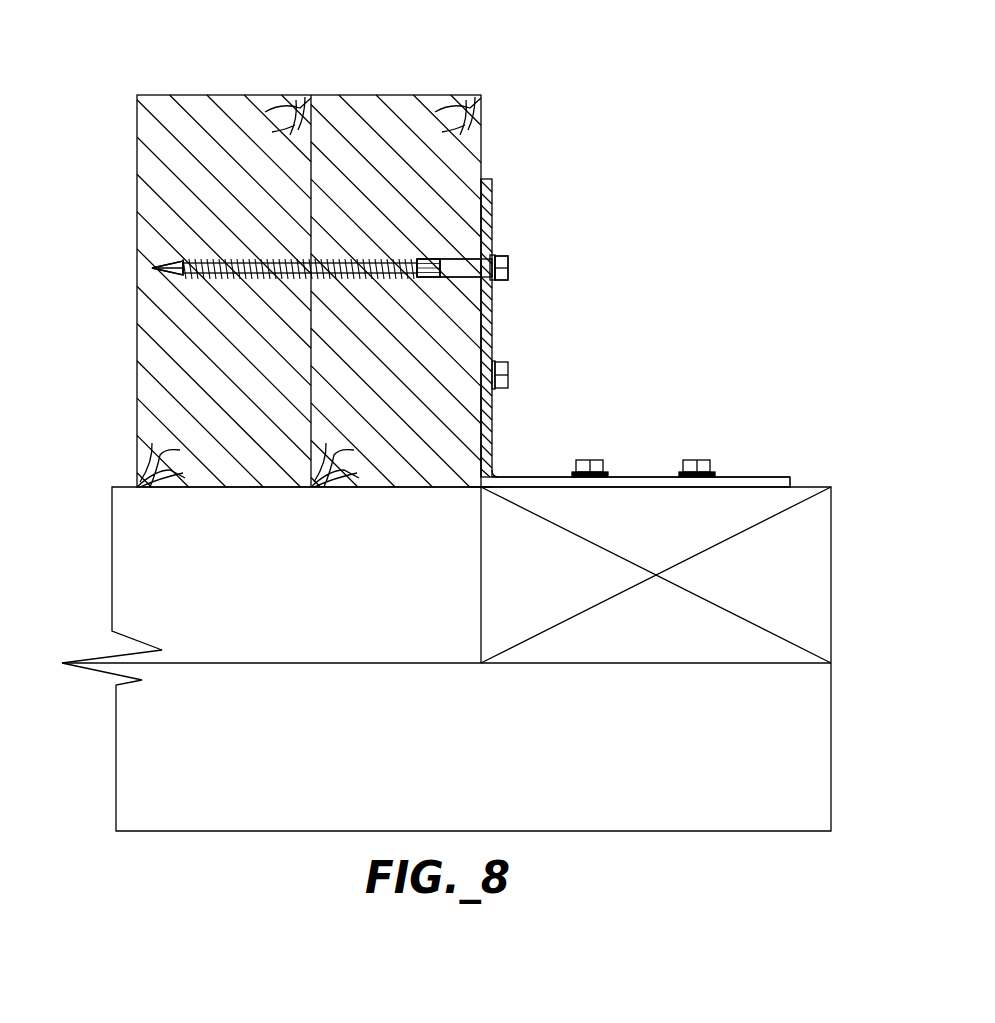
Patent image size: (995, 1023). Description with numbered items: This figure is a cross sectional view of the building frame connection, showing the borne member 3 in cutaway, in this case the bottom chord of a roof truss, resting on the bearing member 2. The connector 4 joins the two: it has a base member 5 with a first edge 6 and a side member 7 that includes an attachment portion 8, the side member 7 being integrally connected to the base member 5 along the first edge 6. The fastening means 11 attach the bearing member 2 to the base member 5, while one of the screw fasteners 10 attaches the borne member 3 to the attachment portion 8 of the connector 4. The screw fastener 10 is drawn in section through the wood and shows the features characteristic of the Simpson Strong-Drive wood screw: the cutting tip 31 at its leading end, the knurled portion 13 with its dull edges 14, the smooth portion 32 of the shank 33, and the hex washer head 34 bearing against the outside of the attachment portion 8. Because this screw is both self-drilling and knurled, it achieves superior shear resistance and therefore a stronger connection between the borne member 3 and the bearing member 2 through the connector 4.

The bearing member 2 is at (806, 487).
The borne member 3 is at (481, 130).
The connector 4 is at (640, 476).
The base member 5 is at (745, 476).
The first edge 6 is at (481, 487).
The side member 7 is at (493, 183).
The attachment portion 8 is at (493, 243).
The screw fastener 10 is at (509, 275).
The fastening means 11 is at (592, 458).
The knurled portion 13 is at (436, 258).
The dull edges 14 is at (436, 278).
The cutting tip 31 is at (166, 273).
The smooth portion 32 is at (481, 290).
The shank 33 is at (195, 255).
The hex washer head 34 is at (512, 262).